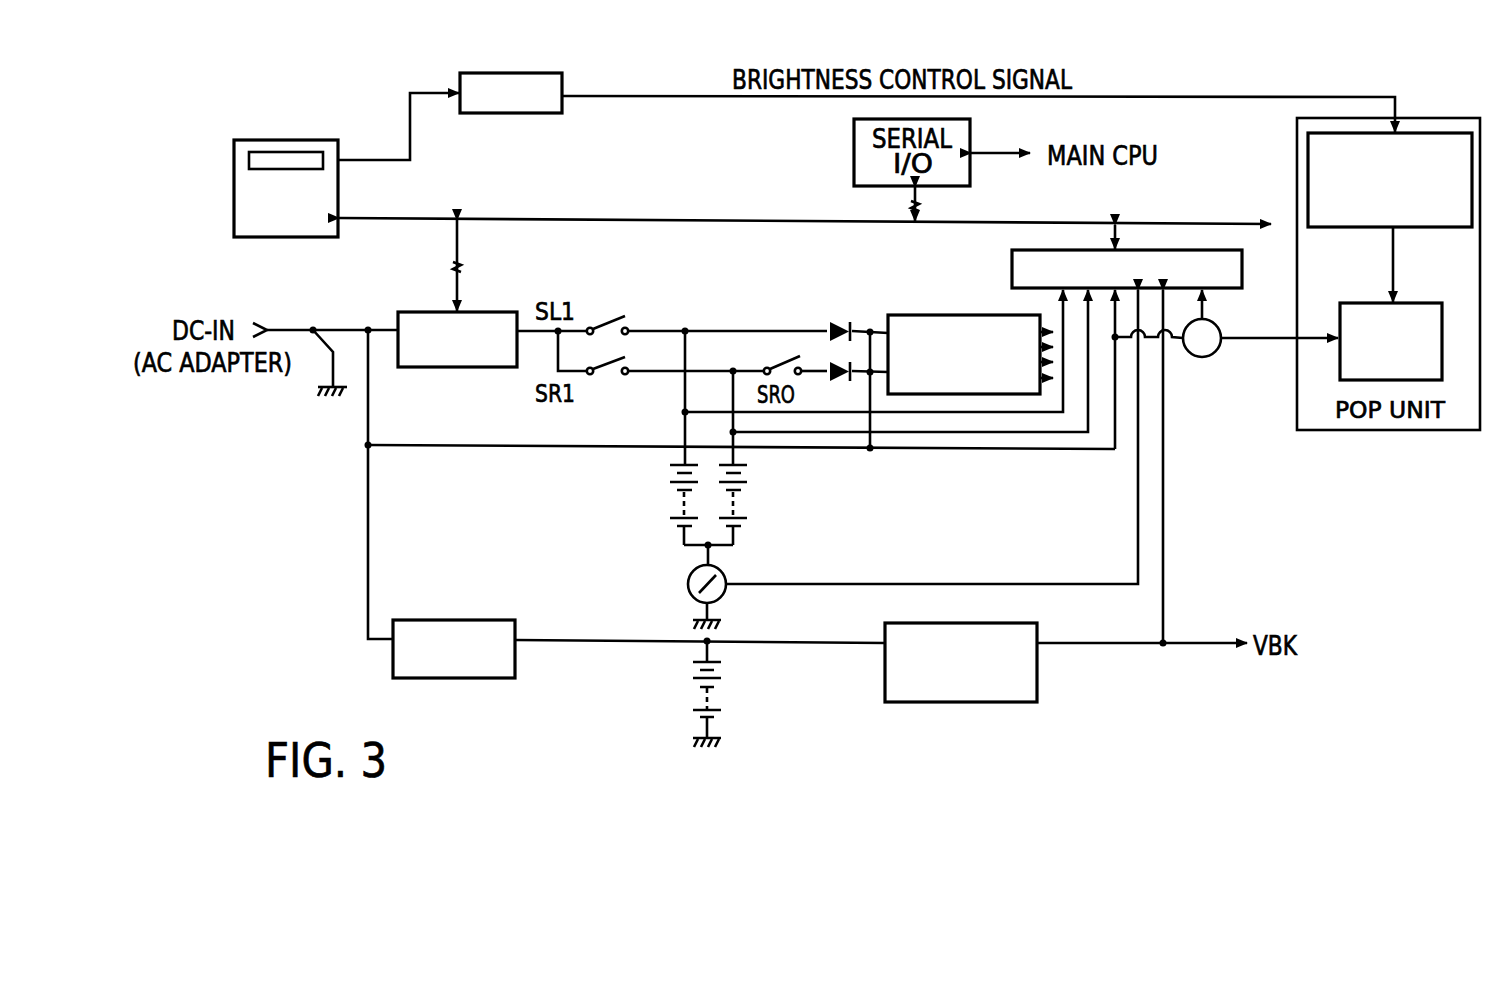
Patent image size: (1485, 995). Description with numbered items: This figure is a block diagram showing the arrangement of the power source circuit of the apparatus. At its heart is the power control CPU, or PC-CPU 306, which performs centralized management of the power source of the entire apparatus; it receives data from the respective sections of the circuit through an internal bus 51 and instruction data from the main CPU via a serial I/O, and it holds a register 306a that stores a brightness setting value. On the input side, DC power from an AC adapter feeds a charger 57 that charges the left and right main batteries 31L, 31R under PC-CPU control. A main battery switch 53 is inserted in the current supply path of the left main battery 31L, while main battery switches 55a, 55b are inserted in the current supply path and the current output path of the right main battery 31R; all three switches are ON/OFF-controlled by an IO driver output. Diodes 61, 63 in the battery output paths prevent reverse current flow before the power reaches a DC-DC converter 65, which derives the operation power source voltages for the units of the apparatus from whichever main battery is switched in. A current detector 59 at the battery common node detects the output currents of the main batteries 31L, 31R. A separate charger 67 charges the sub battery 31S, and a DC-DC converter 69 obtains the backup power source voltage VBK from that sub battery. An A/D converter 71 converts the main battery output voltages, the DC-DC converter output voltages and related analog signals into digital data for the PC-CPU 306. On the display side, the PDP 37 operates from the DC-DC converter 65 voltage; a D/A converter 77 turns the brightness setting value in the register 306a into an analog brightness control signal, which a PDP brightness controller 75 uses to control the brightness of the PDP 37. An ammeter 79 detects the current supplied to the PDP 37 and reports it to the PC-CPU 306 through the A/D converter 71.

The power control CPU (PC-CPU) 306 is at (285, 238).
The register 306a is at (234, 158).
The D/A converter 77 is at (515, 73).
The internal bus 51 is at (378, 222).
The charger 57 is at (484, 311).
The main battery switch (SL1) 53 is at (633, 328).
The main battery switch (SRI) 55a is at (610, 376).
The main battery switch (SRO) 55b is at (768, 358).
The diode 61 is at (842, 319).
The diode 63 is at (836, 362).
The DC-DC converter 65 is at (924, 315).
The A/D converter 71 is at (1243, 268).
The ammeter 79 is at (1202, 357).
The PDP brightness controller 75 is at (1430, 228).
The PDP 37 is at (1350, 303).
The left main battery (M-BATA) 31L is at (668, 478).
The right main battery (M-BATB) 31R is at (748, 478).
The sub battery (S-BAT) 31S is at (720, 692).
The current detector 59 is at (688, 584).
The charger 67 is at (454, 620).
The DC-DC converter 69 is at (962, 703).